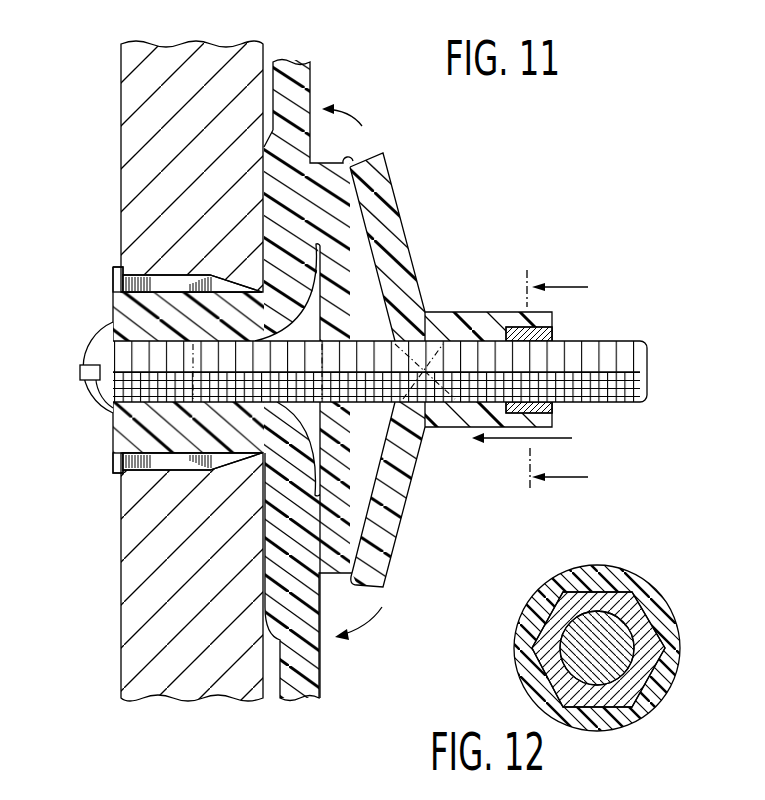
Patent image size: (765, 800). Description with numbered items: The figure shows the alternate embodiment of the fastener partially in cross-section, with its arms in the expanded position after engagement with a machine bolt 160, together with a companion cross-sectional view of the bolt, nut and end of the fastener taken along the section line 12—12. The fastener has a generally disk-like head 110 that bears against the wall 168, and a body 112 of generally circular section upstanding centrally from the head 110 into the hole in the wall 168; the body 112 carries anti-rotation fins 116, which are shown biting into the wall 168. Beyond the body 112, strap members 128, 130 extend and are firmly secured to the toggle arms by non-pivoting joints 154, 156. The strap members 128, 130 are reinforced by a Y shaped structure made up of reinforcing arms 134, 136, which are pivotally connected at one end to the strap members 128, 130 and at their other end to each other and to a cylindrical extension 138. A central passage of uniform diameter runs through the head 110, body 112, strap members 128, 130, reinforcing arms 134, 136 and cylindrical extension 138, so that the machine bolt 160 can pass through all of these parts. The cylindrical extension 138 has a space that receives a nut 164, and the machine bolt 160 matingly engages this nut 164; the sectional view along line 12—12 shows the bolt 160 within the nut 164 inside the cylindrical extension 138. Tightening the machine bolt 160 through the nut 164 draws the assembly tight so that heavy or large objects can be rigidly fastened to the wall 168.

In FIG. 11, the wall 168 is at (137, 97).
In FIG. 11, the non-pivoting joint 154 is at (313, 190).
In FIG. 11, the anti-rotation fins 116 is at (128, 272).
In FIG. 11, the head 110 is at (114, 293).
In FIG. 11, the body 112 is at (113, 317).
In FIG. 11, the strap member 128 is at (350, 297).
In FIG. 11, the strap member 130 is at (343, 445).
In FIG. 11, the reinforcing arm 134 is at (405, 258).
In FIG. 11, the reinforcing arm 136 is at (393, 540).
In FIG. 11, the cylindrical extension 138 is at (453, 420).
In FIG. 12, the cylindrical extension 138 is at (640, 590).
In FIG. 11, the nut 164 is at (552, 332).
In FIG. 12, the nut 164 is at (668, 645).
In FIG. 11, the machine bolt 160 is at (648, 378).
In FIG. 12, the machine bolt 160 is at (597, 648).
In FIG. 11, the non-pivoting joint 156 is at (337, 548).
In FIG. 11, the section line 12— 12 is at (566, 371).